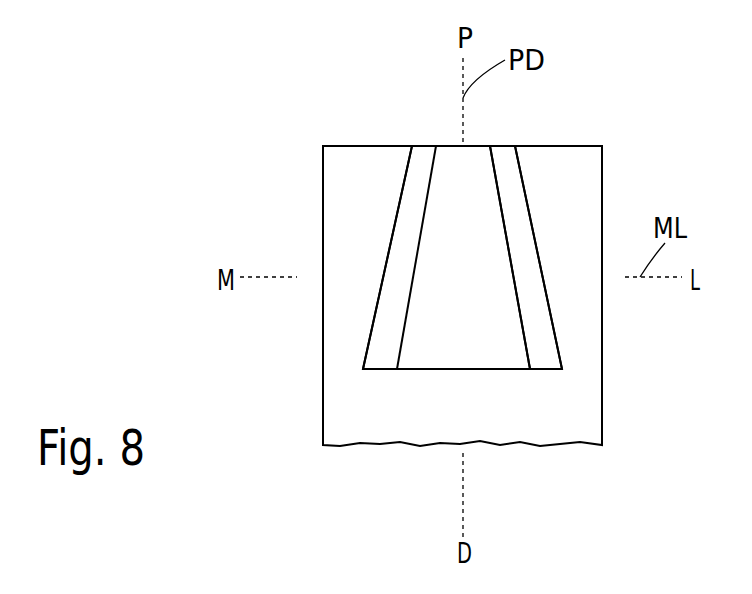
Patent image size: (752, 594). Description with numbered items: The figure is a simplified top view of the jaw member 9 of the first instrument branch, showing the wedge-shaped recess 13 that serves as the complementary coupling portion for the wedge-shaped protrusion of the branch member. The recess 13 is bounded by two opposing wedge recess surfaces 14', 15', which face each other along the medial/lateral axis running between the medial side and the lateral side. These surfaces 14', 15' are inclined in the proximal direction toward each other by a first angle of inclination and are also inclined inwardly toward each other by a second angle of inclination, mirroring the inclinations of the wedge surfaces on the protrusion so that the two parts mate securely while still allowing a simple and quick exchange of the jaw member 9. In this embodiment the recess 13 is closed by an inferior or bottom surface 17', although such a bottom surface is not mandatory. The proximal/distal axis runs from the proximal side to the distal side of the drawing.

The jaw member 9 is at (638, 137).
The wedge-shaped recess 13 is at (408, 110).
The wedge recess surface 14' is at (336, 257).
The wedge recess surface 15' is at (544, 223).
The inferior surface 17' is at (519, 267).